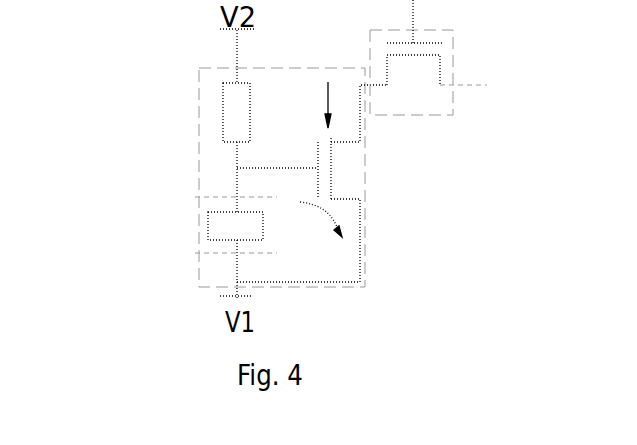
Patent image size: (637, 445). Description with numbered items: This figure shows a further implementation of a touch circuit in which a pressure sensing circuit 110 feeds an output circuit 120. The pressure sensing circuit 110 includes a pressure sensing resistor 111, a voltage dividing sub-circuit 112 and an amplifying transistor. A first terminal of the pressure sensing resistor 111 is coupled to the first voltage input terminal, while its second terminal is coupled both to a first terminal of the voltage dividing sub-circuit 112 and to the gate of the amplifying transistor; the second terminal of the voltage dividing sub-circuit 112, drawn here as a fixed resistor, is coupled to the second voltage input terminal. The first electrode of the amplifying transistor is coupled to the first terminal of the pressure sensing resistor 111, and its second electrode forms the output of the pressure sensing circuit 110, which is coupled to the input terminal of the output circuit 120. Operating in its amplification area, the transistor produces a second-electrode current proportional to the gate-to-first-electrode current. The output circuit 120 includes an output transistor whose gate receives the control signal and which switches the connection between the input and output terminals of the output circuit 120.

The pressure sensing circuit 110 is at (198, 85).
The pressure sensing resistor 111 is at (207, 228).
The voltage dividing sub-circuit 112 is at (223, 112).
The output circuit 120 is at (413, 115).